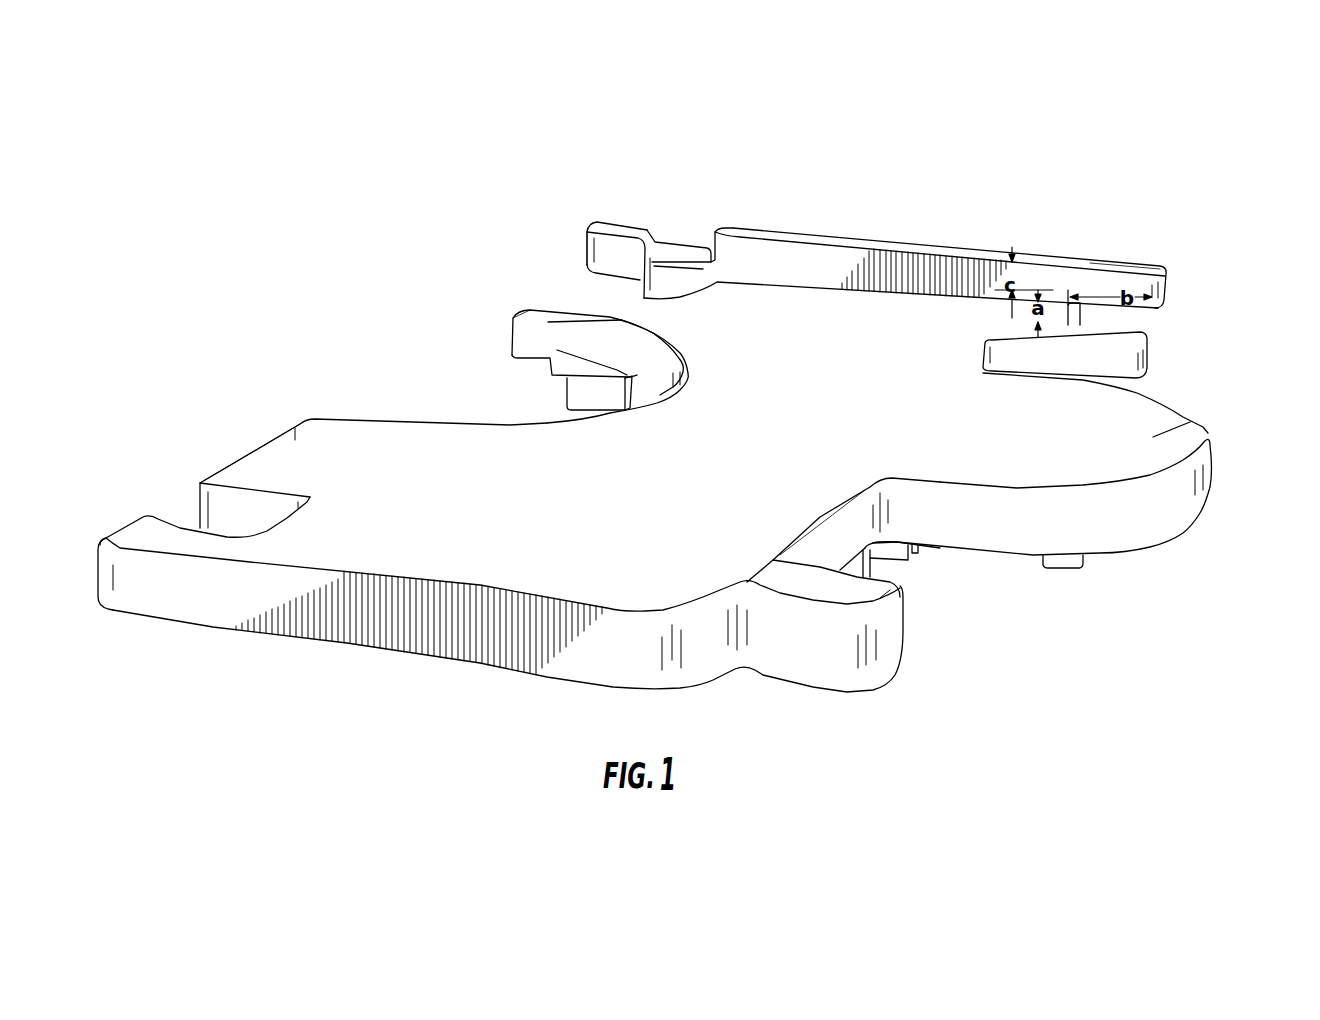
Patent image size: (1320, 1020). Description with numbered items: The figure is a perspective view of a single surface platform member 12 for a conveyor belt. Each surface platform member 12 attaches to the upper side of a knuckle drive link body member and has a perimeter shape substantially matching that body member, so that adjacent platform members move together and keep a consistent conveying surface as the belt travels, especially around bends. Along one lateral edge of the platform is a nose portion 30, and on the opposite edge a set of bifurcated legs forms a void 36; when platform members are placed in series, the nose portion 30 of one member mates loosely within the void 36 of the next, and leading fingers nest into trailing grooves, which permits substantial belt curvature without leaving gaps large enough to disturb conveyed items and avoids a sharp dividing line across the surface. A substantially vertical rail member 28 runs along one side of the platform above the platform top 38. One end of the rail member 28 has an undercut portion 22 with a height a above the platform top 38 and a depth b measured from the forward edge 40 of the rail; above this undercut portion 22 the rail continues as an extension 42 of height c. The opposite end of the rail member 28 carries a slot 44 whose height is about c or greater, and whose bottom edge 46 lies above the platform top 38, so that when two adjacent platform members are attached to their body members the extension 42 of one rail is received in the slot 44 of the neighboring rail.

The surface platform member 12 is at (878, 150).
The undercut portion 22 is at (1107, 317).
The rail member 28 is at (860, 262).
The nose portion 30 is at (1203, 427).
The void 36 is at (510, 425).
The platform top 38 is at (873, 417).
The forward edge 40 is at (1167, 288).
The extension 42 is at (1113, 282).
The slot 44 is at (698, 250).
The bottom edge 46 is at (677, 255).